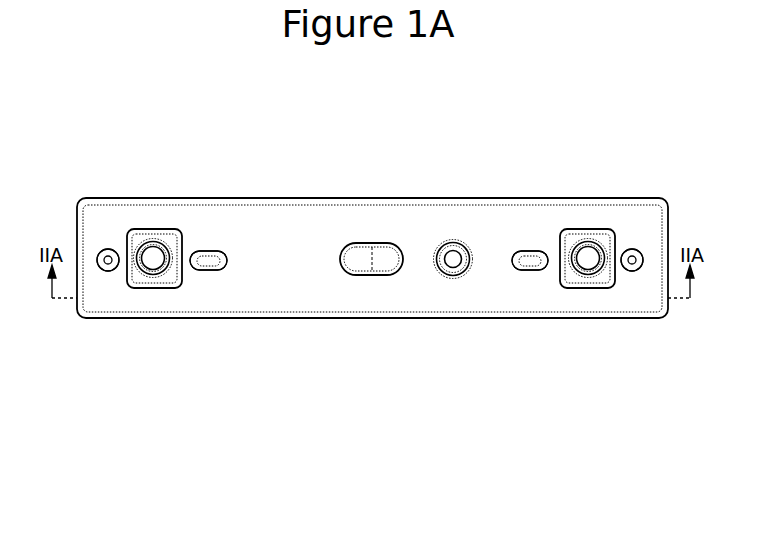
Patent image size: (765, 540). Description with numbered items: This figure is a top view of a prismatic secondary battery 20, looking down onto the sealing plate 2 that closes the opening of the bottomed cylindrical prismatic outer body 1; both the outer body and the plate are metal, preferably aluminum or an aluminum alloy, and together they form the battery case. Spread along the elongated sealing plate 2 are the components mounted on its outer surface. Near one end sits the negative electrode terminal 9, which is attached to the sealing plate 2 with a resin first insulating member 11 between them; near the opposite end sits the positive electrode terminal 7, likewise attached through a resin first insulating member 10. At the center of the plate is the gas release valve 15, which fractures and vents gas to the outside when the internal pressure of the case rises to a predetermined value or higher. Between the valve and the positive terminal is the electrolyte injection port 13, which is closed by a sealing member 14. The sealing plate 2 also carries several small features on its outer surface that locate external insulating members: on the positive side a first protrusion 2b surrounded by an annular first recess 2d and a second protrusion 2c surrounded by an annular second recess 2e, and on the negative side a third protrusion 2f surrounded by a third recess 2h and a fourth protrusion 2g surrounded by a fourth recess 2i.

The prismatic secondary battery 20 is at (88, 102).
The prismatic outer body 1 is at (358, 318).
The sealing plate 2 is at (275, 227).
The first protrusion 2b is at (530, 270).
The second protrusion 2c is at (635, 270).
The first recess 2d is at (530, 252).
The second recess 2e is at (633, 255).
The third protrusion 2f is at (212, 270).
The fourth protrusion 2g is at (108, 271).
The third recess 2h is at (216, 251).
The fourth recess 2i is at (108, 249).
The positive electrode terminal 7 is at (588, 257).
The negative electrode terminal 9 is at (153, 255).
The first insulating member 10 is at (607, 288).
The first insulating member 11 is at (168, 288).
The electrolyte injection port 13 is at (462, 242).
The sealing member 14 is at (453, 264).
The gas release valve 15 is at (386, 250).